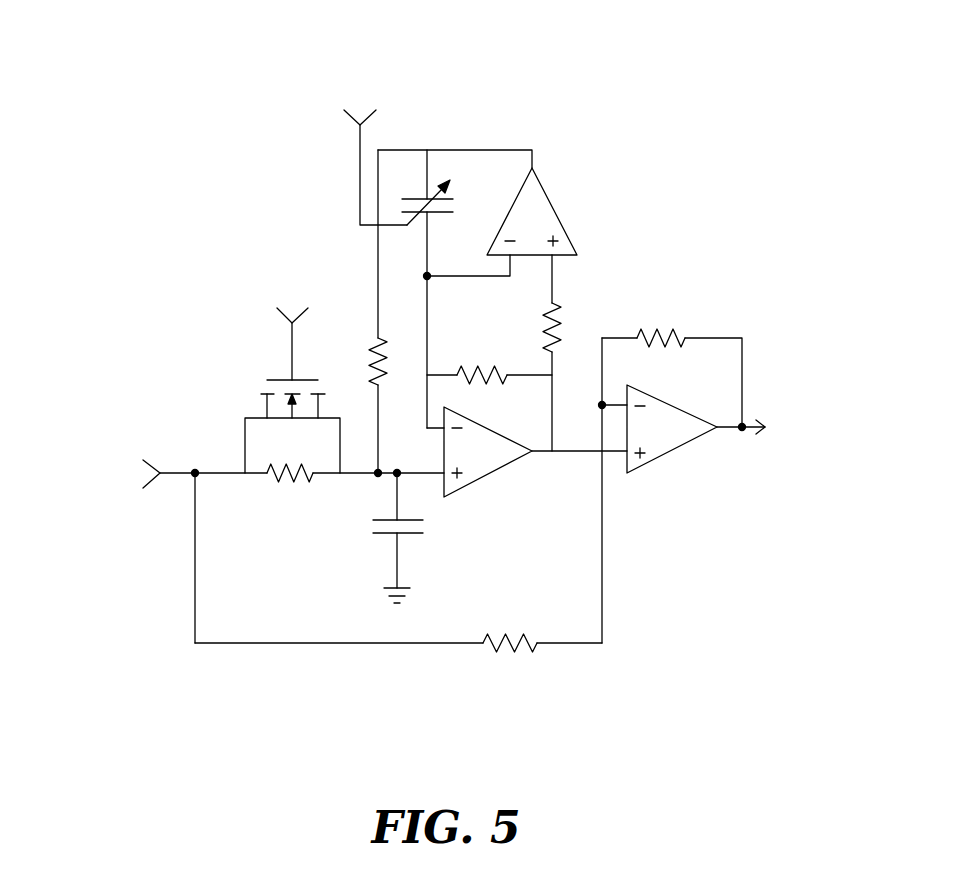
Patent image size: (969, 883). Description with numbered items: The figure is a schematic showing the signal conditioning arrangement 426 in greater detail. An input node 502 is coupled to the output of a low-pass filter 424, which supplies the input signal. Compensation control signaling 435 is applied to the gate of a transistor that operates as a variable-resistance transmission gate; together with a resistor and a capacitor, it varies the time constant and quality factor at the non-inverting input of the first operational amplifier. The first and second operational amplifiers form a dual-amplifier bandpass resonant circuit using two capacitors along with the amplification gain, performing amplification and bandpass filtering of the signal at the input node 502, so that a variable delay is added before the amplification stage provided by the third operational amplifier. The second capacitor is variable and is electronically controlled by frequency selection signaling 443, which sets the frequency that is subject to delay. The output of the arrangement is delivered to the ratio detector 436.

The signal conditioning arrangement 426 is at (520, 86).
The frequency selection signaling 443 is at (366, 119).
The compensation control signaling 435 is at (291, 295).
The low-pass filter 424 is at (112, 476).
The input node 502 is at (195, 540).
The ratio detector 436 is at (794, 430).